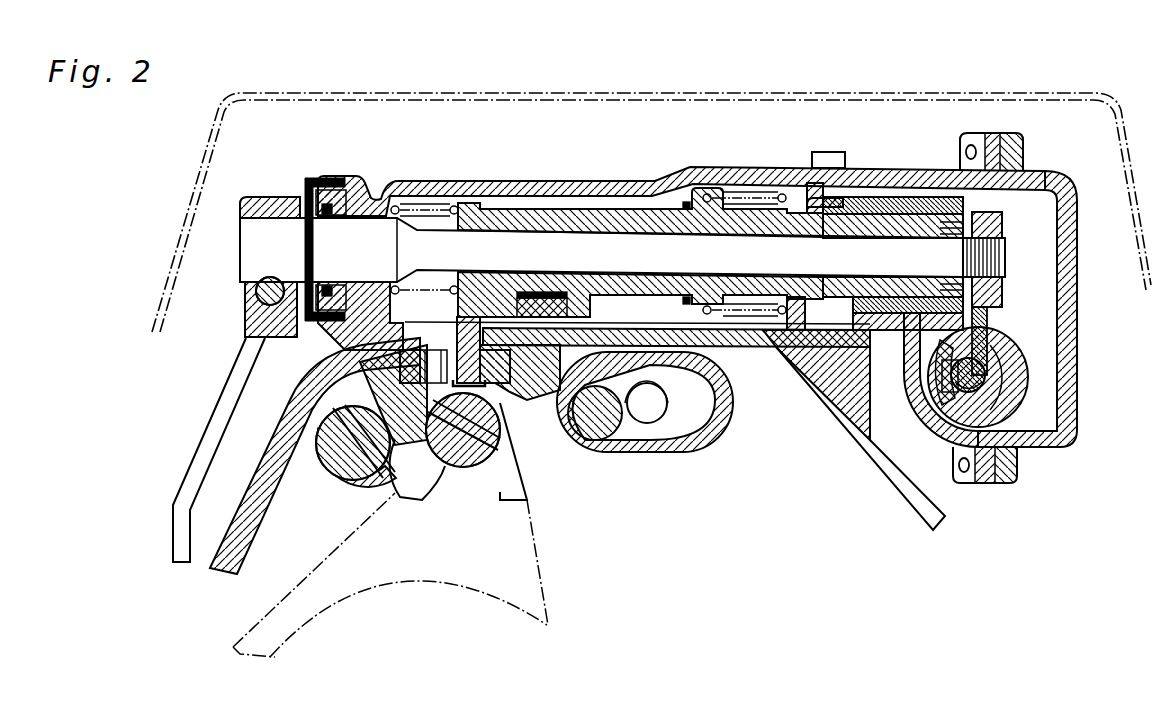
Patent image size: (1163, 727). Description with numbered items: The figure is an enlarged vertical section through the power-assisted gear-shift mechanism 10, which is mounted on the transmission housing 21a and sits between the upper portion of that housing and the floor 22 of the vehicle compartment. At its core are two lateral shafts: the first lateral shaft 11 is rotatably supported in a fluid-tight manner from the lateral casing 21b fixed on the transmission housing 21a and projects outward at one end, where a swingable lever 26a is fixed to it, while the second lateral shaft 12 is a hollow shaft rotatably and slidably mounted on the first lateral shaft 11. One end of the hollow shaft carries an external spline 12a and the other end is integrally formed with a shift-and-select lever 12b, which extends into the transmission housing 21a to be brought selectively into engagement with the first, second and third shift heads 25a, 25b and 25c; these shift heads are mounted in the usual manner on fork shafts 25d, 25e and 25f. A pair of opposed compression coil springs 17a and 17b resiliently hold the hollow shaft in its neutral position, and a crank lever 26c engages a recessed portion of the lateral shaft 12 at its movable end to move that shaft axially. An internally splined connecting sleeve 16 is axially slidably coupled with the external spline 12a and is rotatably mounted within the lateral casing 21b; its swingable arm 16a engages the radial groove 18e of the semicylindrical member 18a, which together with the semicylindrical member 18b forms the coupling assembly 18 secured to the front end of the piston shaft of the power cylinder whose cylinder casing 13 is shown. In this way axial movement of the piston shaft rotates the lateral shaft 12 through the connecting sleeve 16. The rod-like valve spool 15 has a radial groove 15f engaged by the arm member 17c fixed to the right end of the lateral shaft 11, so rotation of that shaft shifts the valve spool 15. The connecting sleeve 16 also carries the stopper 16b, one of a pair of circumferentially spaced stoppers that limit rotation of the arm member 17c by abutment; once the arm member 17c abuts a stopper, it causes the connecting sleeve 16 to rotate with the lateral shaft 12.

The power-assisted gear-shift mechanism 10 is at (565, 166).
The first lateral shaft 11 is at (592, 238).
The second lateral shaft 12 is at (636, 210).
The external spline 12a is at (905, 214).
The shift-and-select lever 12b is at (448, 330).
The cylinder casing 13 is at (1066, 270).
The valve spool 15 is at (1002, 372).
The radial groove 15f is at (975, 390).
The connecting sleeve 16 is at (872, 200).
The swingable arm 16a is at (912, 415).
The stopper 16b is at (1003, 297).
The compression coil spring 17a is at (428, 208).
The compression coil spring 17b is at (755, 192).
The arm member 17c is at (1003, 224).
The ball bearing 18 is at (1012, 336).
The semicylindrical member 18a is at (945, 365).
The semicylindrical member 18b is at (1018, 392).
The radial groove 18e is at (958, 372).
The transmission housing 21a is at (258, 498).
The lateral casing 21b is at (696, 184).
The floor 22 is at (566, 98).
The first shift head 25a is at (392, 378).
The second shift head 25b is at (510, 402).
The third shift head 25c is at (590, 337).
The fork shaft 25d is at (347, 462).
The fork shaft 25e is at (462, 455).
The fork shaft 25f is at (610, 432).
The swingable lever 26a is at (226, 398).
The crank lever 26c is at (556, 290).